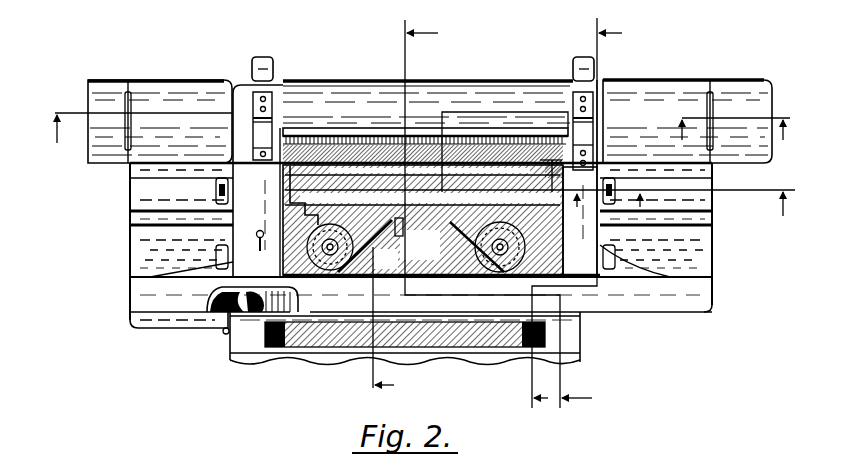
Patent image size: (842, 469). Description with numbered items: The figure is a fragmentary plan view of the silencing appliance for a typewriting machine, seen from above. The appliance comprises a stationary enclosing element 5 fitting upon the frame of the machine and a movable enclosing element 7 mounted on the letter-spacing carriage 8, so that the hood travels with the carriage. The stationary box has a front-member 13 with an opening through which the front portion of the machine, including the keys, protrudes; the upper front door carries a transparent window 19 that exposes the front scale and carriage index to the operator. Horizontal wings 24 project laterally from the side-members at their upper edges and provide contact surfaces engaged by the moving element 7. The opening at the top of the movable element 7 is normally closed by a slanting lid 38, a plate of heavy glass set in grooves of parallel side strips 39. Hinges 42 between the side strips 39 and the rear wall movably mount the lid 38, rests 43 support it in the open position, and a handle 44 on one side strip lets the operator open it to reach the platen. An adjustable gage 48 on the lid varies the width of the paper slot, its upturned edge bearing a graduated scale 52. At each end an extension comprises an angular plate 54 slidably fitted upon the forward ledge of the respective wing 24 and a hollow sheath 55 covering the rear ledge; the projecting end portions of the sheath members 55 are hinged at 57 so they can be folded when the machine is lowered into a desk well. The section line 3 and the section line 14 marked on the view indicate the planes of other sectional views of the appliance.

The section line 3- 3 is at (577, 218).
The stationary enclosing element 5 is at (498, 218).
The movable enclosing element 7 is at (740, 135).
The letter-spacing carriage 8 is at (607, 188).
The front-member 13 is at (389, 323).
The section line 14- 14 is at (416, 177).
The transparent window 19 is at (290, 338).
The horizontal wings 24 is at (138, 197).
The slanting lid 38 is at (461, 159).
The side strips 39 is at (247, 228).
The hinges 42 is at (267, 124).
The rests 43 is at (263, 69).
The handle 44 is at (259, 251).
The adjustable gage 48 is at (297, 135).
The graduated scale 52 is at (338, 135).
The angular plate 54 is at (146, 247).
The sheath 55 is at (200, 100).
The hinges 57 is at (128, 108).